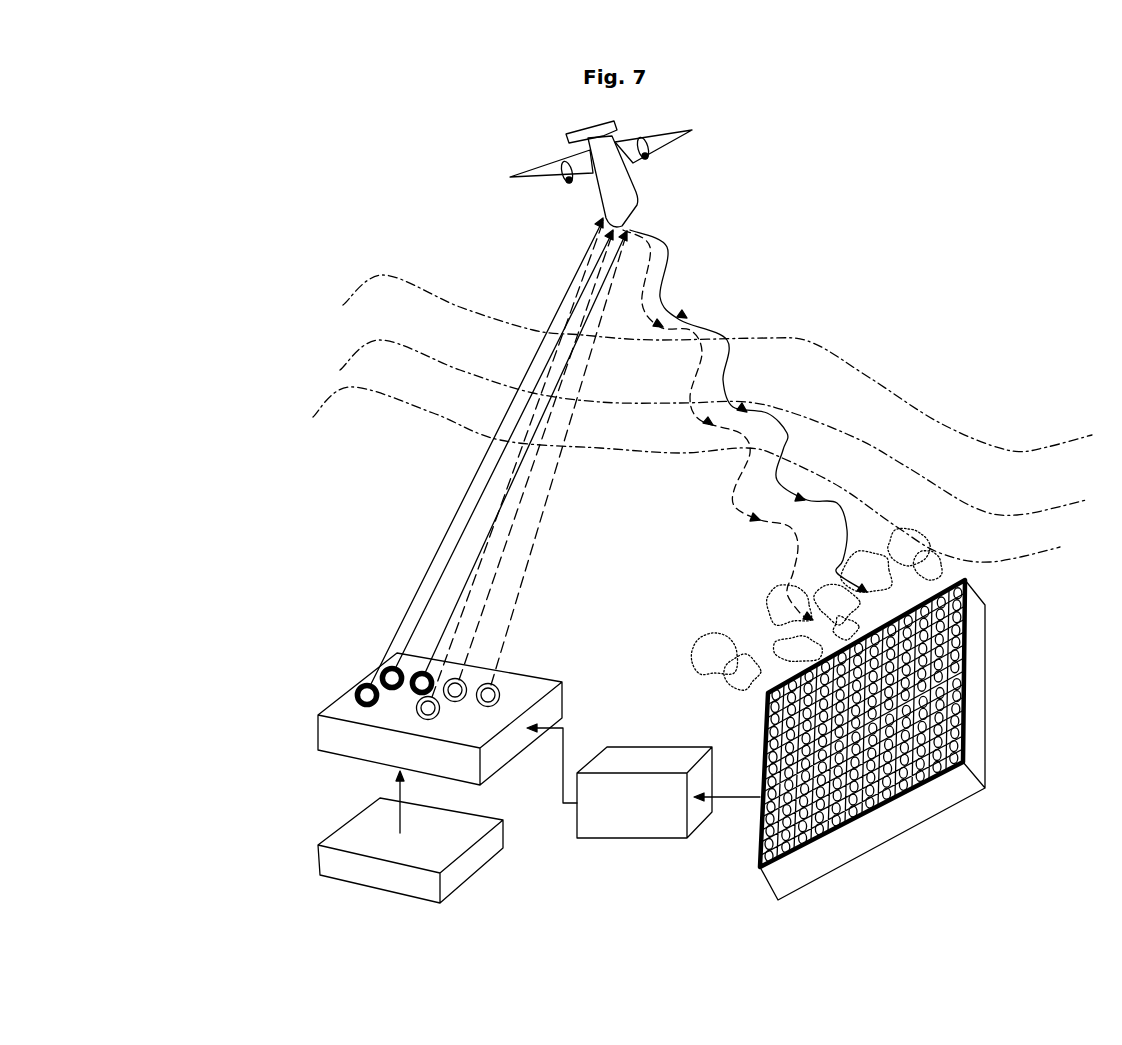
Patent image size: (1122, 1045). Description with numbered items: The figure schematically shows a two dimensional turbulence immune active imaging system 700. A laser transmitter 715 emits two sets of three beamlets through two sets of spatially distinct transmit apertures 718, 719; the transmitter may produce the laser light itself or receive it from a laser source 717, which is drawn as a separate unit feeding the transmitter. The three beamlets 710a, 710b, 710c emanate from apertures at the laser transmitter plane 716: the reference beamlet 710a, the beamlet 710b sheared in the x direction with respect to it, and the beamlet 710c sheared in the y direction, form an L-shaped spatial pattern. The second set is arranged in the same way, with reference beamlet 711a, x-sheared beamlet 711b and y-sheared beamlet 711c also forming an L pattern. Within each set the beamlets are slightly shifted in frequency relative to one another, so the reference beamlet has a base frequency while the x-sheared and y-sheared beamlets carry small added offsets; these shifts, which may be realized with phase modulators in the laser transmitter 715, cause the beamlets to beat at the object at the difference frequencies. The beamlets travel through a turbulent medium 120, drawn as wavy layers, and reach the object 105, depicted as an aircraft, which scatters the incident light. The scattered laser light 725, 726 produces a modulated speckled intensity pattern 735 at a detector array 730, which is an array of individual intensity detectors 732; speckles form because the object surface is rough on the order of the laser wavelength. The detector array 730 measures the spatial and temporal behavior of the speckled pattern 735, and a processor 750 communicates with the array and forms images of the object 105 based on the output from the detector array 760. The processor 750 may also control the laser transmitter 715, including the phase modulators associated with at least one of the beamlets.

The object 105 is at (637, 183).
The turbulent medium 120 is at (870, 378).
The two dimensional turbulence immune active imaging system 700 is at (252, 585).
The reference beamlet 710a is at (442, 635).
The x-sheared beamlet 710b is at (435, 588).
The y-sheared beamlet 710c is at (432, 557).
The reference beamlet 711a is at (465, 643).
The x-sheared beamlet 711b is at (515, 610).
The y-sheared beamlet 711c is at (460, 613).
The laser transmitter 715 is at (328, 728).
The laser transmitter plane 716 is at (380, 672).
The laser source 717 is at (327, 837).
The transmit apertures 718 is at (355, 689).
The transmit apertures 719 is at (499, 693).
The scattered laser light 725 is at (720, 383).
The scattered laser light 726 is at (687, 332).
The detector array 730 is at (939, 740).
The intensity detectors 732 is at (952, 753).
The modulated speckled intensity pattern 735 is at (753, 658).
The processor 750 is at (619, 781).
The output from the detector array 760 is at (745, 800).